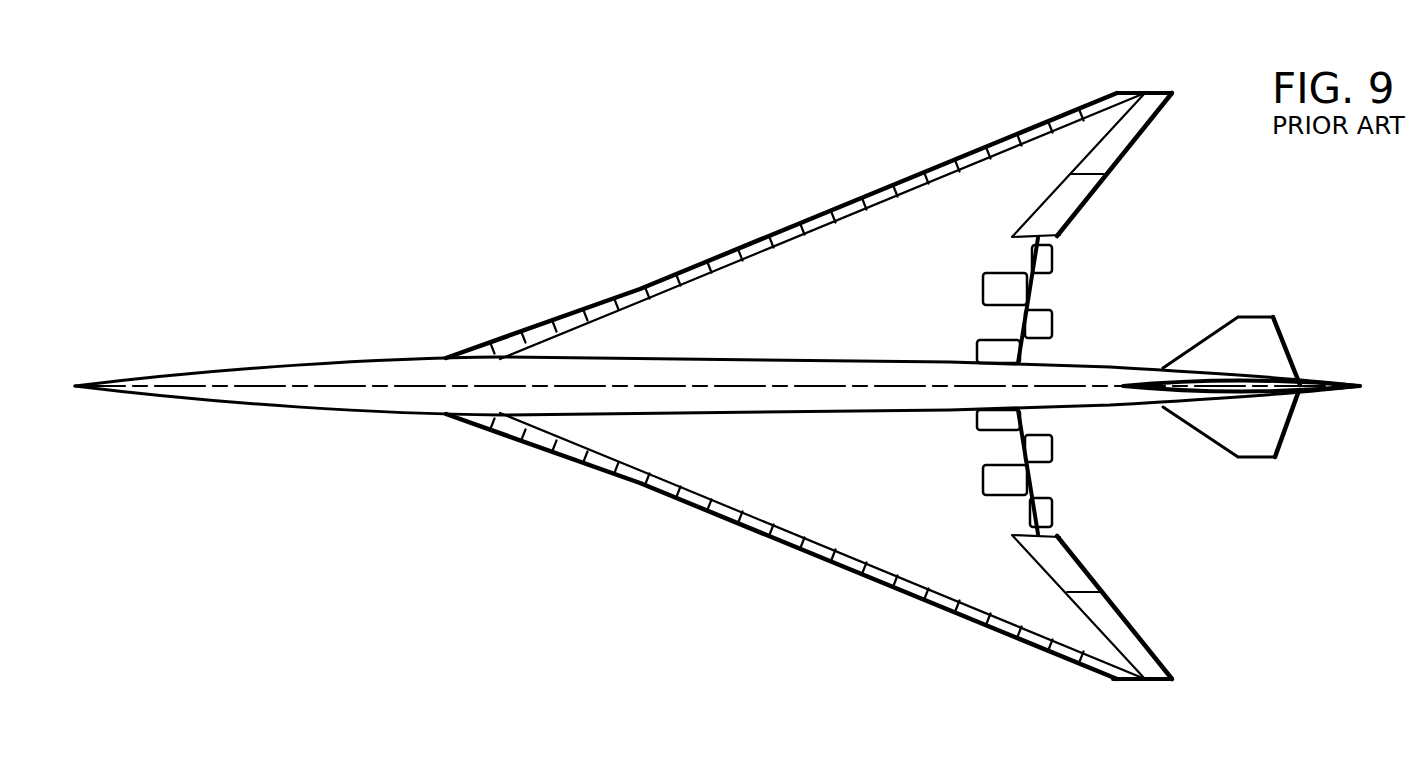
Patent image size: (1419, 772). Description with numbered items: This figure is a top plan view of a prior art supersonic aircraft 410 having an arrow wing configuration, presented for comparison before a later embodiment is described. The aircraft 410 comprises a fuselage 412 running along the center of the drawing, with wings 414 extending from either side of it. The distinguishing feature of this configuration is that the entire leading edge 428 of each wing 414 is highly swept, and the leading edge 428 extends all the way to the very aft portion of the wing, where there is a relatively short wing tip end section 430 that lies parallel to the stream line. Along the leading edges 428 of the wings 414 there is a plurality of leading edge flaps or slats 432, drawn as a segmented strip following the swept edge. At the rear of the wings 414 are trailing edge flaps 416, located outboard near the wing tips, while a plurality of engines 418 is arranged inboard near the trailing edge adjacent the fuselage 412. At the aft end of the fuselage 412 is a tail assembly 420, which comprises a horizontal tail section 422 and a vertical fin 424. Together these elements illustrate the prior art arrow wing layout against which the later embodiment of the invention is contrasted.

The aircraft 410 is at (385, 296).
The fuselage 412 is at (362, 362).
The wings 414 is at (738, 288).
The trailing edge flaps 416 is at (1088, 203).
The engines 418 is at (1048, 320).
The tail assembly 420 is at (1286, 298).
The horizontal tail section 422 is at (1267, 343).
The vertical fin 424 is at (1253, 382).
The leading edge 428 is at (603, 300).
The wing tip end section 430 is at (1147, 93).
The leading edge flaps or slats 432 is at (868, 196).